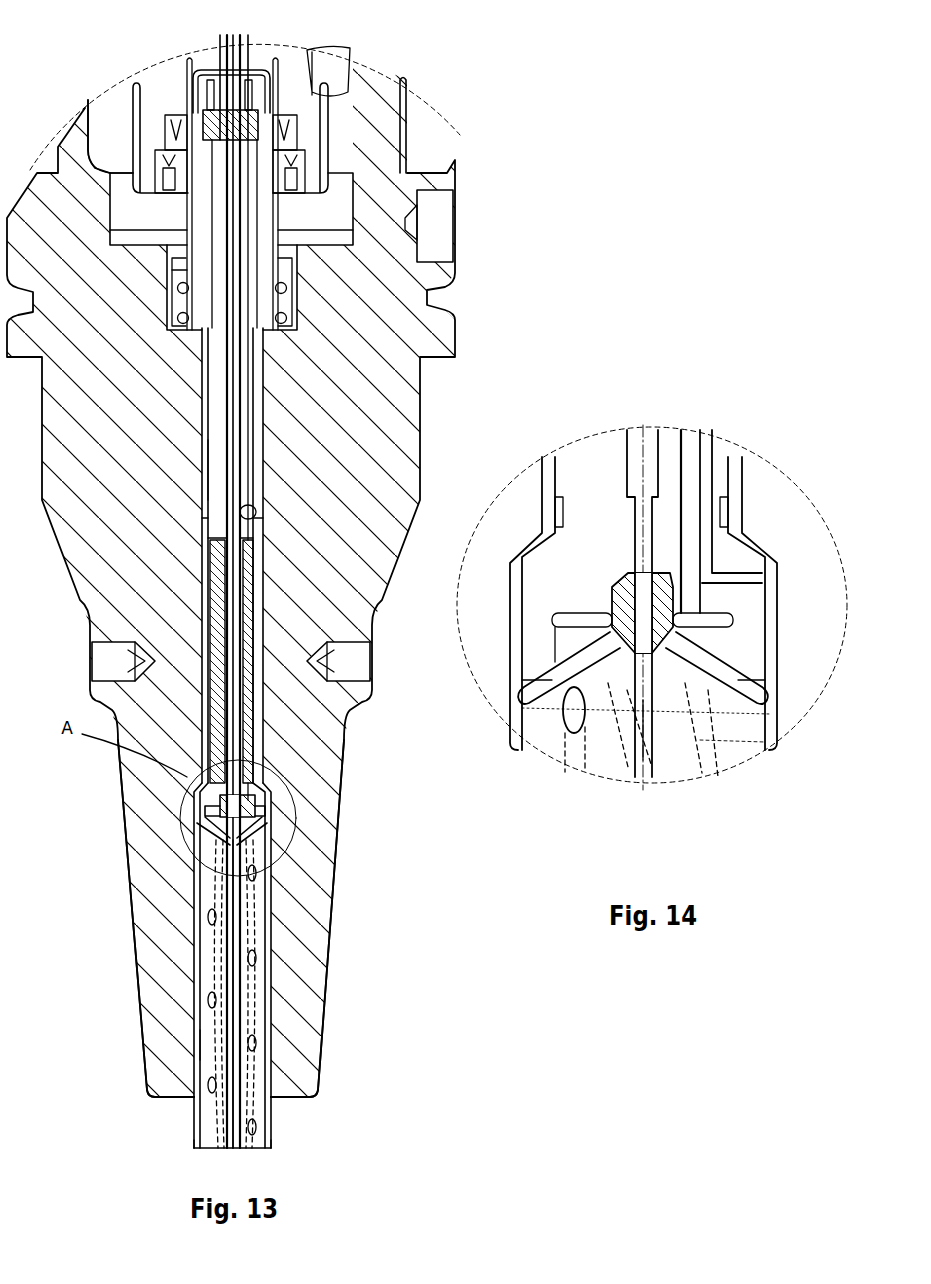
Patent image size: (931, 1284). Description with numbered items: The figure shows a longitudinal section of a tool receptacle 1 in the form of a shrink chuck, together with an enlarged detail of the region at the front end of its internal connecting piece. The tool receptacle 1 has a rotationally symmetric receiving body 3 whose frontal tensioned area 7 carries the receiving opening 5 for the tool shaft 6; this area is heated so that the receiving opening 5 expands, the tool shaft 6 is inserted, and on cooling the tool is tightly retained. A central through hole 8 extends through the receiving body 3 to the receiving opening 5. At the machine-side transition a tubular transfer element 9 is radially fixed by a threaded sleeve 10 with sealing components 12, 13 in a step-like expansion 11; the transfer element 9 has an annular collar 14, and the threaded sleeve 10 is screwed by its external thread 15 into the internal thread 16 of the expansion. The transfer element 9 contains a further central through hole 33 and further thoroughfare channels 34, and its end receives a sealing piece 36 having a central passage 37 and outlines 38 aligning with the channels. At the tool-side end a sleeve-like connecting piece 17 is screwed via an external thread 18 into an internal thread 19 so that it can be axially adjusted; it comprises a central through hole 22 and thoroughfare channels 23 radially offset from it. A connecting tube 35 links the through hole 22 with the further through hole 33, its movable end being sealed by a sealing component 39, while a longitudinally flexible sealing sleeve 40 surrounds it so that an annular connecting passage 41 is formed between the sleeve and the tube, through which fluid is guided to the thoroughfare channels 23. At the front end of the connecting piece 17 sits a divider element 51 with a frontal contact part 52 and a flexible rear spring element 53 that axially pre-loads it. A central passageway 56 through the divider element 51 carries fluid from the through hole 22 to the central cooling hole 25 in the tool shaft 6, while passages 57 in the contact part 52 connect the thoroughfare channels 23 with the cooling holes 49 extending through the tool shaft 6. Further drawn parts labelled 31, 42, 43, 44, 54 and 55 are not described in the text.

In FIG. 13, the tool receptacle 1 is at (490, 152).
In FIG. 13, the receiving body 3 is at (365, 402).
In FIG. 13, the receiving opening 5 is at (198, 970).
In FIG. 13, the tool shaft 6 is at (204, 1045).
In FIG. 13, the frontal tensioned area 7 is at (315, 975).
In FIG. 13, the central through hole 8 is at (256, 513).
In FIG. 13, the tubular transfer element 9 is at (407, 170).
In FIG. 13, the threaded sleeve 10 is at (432, 237).
In FIG. 13, the step-like expansion 11 is at (296, 322).
In FIG. 13, the sealing component 12 is at (170, 288).
In FIG. 13, the sealing component 13 is at (170, 330).
In FIG. 13, the annular collar 14 is at (176, 303).
In FIG. 13, the external thread 15 is at (283, 312).
In FIG. 13, the internal thread 16 is at (172, 292).
In FIG. 13, the sleeve-like connecting piece 17 is at (263, 687).
In FIG. 14, the sleeve-like connecting piece 17 is at (590, 455).
In FIG. 13, the external thread 18 is at (258, 640).
In FIG. 13, the internal thread 19 is at (257, 727).
In FIG. 13, the central through hole 22 is at (262, 805).
In FIG. 14, the central through hole 22 is at (655, 547).
In FIG. 13, the thoroughfare channels 23 is at (262, 612).
In FIG. 14, the thoroughfare channels 23 is at (695, 470).
In FIG. 13, the central cooling hole 25 is at (236, 1010).
In FIG. 14, the central cooling hole 25 is at (636, 720).
In FIG. 13, the tube end 31 is at (300, 1098).
In FIG. 13, the further central through hole 33 is at (267, 240).
In FIG. 13, the further thoroughfare channels 34 is at (273, 140).
In FIG. 13, the connecting tube 35 is at (224, 472).
In FIG. 13, the sealing piece 36 is at (250, 157).
In FIG. 13, the central passage 37 is at (226, 128).
In FIG. 13, the outlines 38 is at (242, 122).
In FIG. 13, the sealing component 39 is at (250, 543).
In FIG. 13, the sealing sleeve 40 is at (256, 405).
In FIG. 13, the connecting passage 41 is at (108, 140).
In FIG. 13, the cap 42 is at (172, 70).
In FIG. 13, the spacer 43 is at (258, 78).
In FIG. 13, the clamping block 44 is at (210, 95).
In FIG. 13, the cooling holes 49 is at (215, 875).
In FIG. 14, the cooling holes 49 is at (580, 760).
In FIG. 13, the divider element 51 is at (210, 800).
In FIG. 14, the divider element 51 is at (625, 590).
In FIG. 13, the frontal contact part 52 is at (277, 840).
In FIG. 14, the frontal contact part 52 is at (763, 663).
In FIG. 13, the flexible rear spring element 53 is at (270, 806).
In FIG. 14, the flexible rear spring element 53 is at (705, 612).
In FIG. 14, the channel 54 is at (732, 733).
In FIG. 14, the opening 55 is at (623, 733).
In FIG. 14, the central passageway 56 is at (642, 640).
In FIG. 14, the passages 57 is at (510, 620).